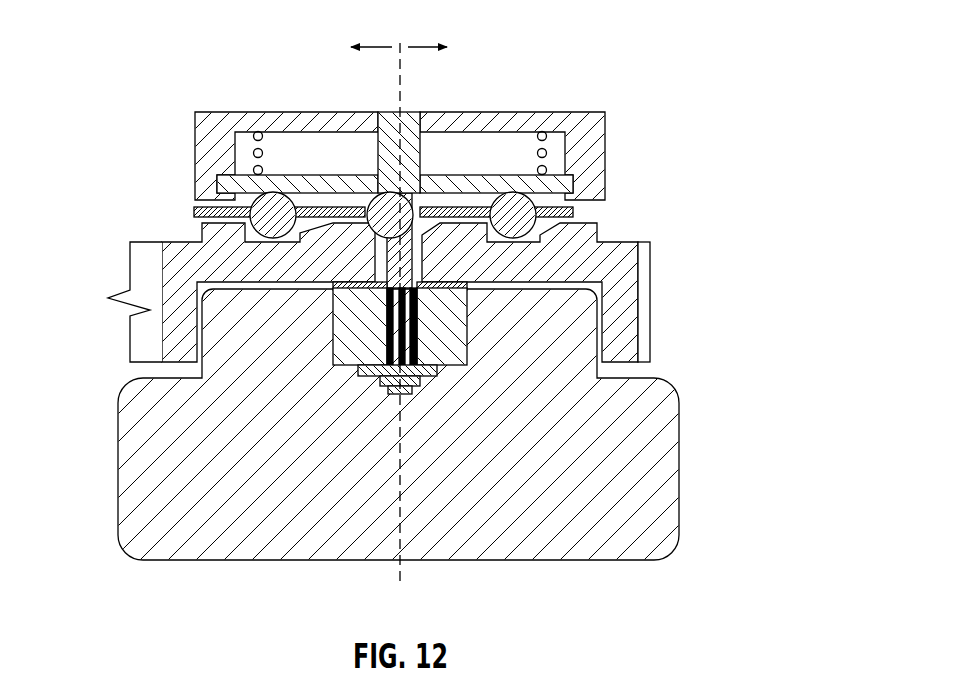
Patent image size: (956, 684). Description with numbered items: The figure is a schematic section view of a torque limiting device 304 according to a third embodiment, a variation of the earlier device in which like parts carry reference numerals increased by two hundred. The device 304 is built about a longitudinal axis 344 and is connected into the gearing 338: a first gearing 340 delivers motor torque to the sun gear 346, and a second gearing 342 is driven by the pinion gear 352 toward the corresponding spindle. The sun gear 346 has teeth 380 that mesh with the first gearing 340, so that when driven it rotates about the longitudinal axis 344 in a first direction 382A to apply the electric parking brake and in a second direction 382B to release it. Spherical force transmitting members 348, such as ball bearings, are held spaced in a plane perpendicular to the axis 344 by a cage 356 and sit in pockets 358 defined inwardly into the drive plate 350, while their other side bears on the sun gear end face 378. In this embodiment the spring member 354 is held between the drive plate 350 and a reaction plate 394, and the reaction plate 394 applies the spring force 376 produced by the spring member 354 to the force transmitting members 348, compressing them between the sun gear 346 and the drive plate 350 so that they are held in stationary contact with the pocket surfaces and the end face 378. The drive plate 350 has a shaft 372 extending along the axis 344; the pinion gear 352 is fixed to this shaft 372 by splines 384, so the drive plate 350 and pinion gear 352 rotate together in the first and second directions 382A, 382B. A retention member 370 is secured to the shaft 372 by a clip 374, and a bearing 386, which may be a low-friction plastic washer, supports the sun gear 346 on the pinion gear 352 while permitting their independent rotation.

The torque limiting device 304 is at (634, 126).
The gearing 338 is at (126, 372).
The first gearing 340 is at (128, 333).
The second gearing 342 is at (680, 468).
The longitudinal axis 344 is at (400, 88).
The sun gear 346 is at (625, 343).
The force transmitting members 348 is at (520, 203).
The drive plate 350 is at (595, 112).
The pinion gear 352 is at (467, 338).
The spring member 354 is at (248, 154).
The cage 356 is at (573, 212).
The pockets 358 is at (247, 232).
The retention member 370 is at (377, 372).
The shaft 372 is at (413, 340).
The clip 374 is at (411, 388).
The spring force 376 is at (399, 158).
The sun gear end face 378 is at (624, 240).
The teeth 380 is at (649, 291).
The first direction 382A is at (427, 43).
The second direction 382B is at (373, 43).
The splines 384 is at (403, 350).
The bearing 386 is at (332, 289).
The reaction plate 394 is at (473, 180).